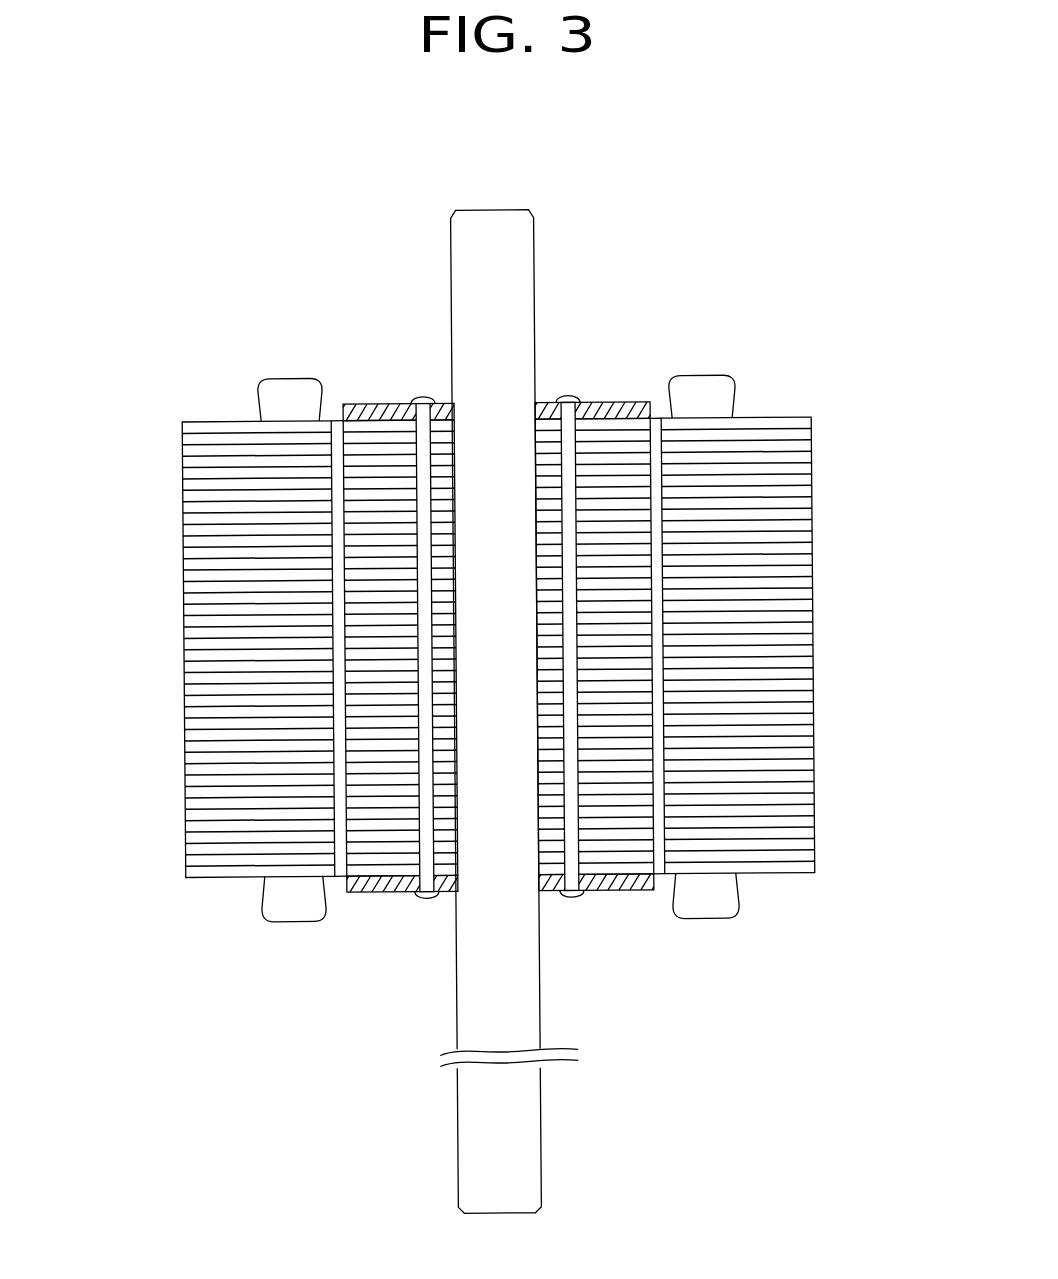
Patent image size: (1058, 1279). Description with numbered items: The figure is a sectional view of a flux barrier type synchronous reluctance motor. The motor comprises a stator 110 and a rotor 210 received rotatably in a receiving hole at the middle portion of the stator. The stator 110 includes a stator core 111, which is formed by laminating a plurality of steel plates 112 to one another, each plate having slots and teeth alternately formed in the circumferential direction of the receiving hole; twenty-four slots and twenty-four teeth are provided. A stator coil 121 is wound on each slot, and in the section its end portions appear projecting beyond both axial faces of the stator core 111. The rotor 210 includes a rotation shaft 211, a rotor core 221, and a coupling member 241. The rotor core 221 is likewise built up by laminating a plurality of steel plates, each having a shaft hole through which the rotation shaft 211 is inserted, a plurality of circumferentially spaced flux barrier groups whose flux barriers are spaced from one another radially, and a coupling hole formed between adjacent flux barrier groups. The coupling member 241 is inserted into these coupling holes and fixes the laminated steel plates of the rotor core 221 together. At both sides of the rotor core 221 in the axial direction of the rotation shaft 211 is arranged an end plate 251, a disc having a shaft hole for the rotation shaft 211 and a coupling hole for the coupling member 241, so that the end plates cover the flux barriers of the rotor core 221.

The stator 110 is at (820, 603).
The stator core 111 is at (80, 433).
The steel plate 112 is at (182, 520).
The stator coil 121 is at (276, 381).
The rotor 210 is at (718, 215).
The rotation shaft 211 is at (520, 333).
The rotor core 221 is at (641, 392).
The coupling member 241 is at (576, 392).
The end plate 251 is at (620, 900).